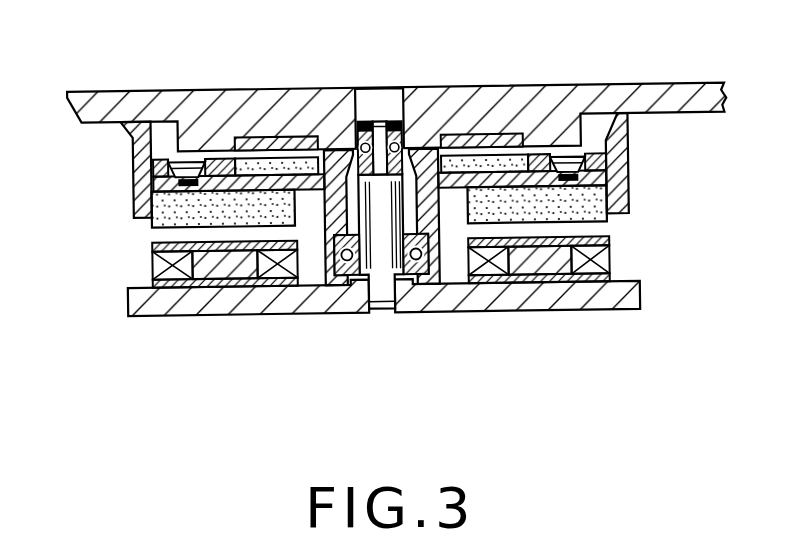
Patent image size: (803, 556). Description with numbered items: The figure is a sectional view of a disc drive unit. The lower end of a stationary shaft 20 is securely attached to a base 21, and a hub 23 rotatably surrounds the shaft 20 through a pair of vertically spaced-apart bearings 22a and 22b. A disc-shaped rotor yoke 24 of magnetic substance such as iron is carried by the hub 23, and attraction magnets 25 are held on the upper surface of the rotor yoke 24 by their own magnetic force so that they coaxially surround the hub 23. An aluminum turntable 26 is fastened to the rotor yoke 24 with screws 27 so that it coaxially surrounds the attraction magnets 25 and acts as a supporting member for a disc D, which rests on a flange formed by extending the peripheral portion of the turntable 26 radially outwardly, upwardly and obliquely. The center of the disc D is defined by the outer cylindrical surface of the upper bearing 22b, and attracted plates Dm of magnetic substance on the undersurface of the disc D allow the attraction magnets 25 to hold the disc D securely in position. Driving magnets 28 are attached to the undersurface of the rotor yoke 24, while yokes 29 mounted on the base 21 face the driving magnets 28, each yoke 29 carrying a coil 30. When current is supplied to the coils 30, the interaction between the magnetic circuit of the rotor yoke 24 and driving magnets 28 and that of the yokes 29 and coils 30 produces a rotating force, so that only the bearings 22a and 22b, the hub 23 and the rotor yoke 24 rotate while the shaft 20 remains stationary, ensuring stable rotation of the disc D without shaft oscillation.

The disc D is at (514, 86).
The attracted plates Dm is at (521, 142).
The shaft 20 is at (386, 313).
The base 21 is at (319, 302).
The lower bearing 22a is at (437, 283).
The upper bearing 22b is at (404, 130).
The hub 23 is at (443, 246).
The rotor yoke 24 is at (212, 200).
The attraction magnets 25 is at (283, 170).
The turntable 26 is at (131, 128).
The screws 27 is at (207, 181).
The driving magnets 28 is at (601, 217).
The yokes 29 is at (235, 288).
The coil 30 is at (160, 262).